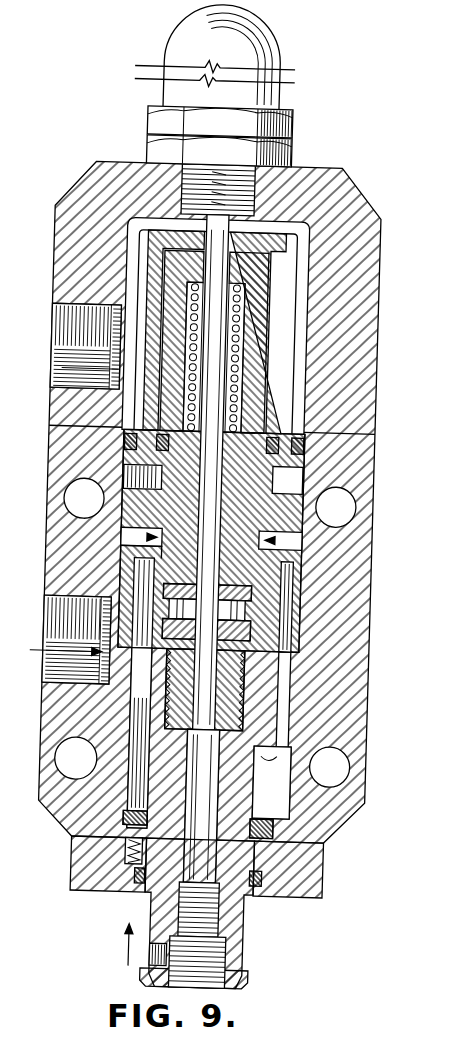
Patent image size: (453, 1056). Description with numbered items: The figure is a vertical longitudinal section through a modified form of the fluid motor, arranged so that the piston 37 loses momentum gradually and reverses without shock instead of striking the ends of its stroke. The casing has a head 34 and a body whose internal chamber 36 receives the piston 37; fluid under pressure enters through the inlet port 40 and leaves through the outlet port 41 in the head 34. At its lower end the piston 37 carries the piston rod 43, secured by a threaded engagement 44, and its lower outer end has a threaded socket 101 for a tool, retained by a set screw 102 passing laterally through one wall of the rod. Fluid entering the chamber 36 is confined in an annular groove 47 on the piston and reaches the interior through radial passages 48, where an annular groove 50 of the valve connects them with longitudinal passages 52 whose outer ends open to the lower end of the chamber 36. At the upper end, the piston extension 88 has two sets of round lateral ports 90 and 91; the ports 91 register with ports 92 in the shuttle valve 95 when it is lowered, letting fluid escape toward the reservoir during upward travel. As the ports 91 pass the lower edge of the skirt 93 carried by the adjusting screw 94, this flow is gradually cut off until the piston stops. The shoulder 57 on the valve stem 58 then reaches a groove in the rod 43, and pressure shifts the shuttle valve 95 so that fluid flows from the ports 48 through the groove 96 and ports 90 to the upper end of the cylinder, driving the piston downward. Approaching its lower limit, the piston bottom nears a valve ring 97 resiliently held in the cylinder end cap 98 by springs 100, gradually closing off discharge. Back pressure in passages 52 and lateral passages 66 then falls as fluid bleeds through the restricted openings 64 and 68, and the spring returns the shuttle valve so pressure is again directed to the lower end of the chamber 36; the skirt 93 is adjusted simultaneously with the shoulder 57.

The head 34 is at (118, 359).
The internal chamber 36 is at (132, 762).
The piston 37 is at (140, 627).
The inlet port 40 is at (116, 667).
The outlet port 41 is at (117, 370).
The piston rod 43 is at (251, 928).
The threaded engagement 44 is at (155, 622).
The annular groove 47 is at (153, 541).
The radial passages 48 is at (158, 544).
The annular groove 50 is at (191, 523).
The longitudinal passages 52 is at (145, 712).
The shoulder 57 is at (255, 716).
The valve stem 58 is at (210, 773).
The restricted opening 64 is at (246, 627).
The lateral passages 66 is at (238, 610).
The restricted opening 68 is at (231, 587).
The piston extension 88 is at (249, 346).
The lateral ports 90 is at (173, 484).
The lateral ports 91 is at (129, 454).
The ports 92 is at (257, 429).
The skirt 93 is at (272, 392).
The adjusting screw 94 is at (266, 190).
The shuttle valve 95 is at (250, 496).
The groove 96 is at (240, 526).
The valve ring 97 is at (281, 825).
The cylinder end cap 98 is at (315, 873).
The springs 100 is at (135, 852).
The threaded socket 101 is at (218, 963).
The set screw 102 is at (170, 960).